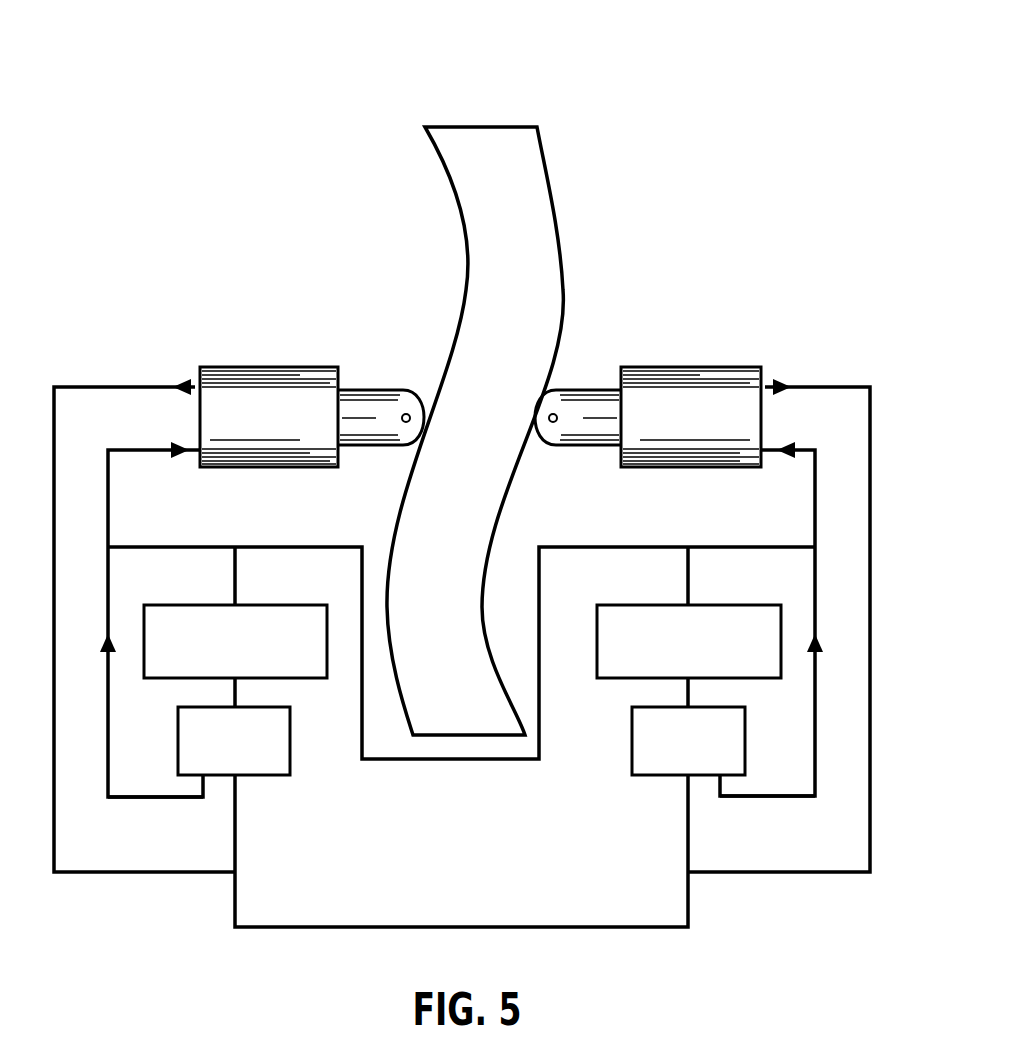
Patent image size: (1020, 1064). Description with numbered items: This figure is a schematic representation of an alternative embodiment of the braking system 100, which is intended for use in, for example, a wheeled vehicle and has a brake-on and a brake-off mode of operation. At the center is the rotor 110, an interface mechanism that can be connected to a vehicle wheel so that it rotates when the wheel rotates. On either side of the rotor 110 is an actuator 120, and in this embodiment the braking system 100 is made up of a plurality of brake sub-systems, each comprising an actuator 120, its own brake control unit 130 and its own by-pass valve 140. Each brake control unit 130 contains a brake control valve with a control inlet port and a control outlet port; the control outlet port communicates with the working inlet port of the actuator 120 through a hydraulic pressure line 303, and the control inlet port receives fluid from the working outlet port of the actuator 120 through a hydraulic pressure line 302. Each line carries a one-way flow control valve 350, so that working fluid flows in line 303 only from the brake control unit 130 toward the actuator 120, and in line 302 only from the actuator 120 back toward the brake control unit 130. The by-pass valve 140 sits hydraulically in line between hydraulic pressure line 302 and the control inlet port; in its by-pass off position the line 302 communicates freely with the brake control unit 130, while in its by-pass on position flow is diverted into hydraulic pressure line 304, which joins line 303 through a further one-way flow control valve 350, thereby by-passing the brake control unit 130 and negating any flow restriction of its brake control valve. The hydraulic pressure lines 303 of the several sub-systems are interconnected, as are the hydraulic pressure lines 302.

The braking system 100 is at (608, 68).
The rotor 110 is at (556, 172).
The actuator 120 is at (264, 382).
The brake control unit 130 is at (251, 605).
The by-pass valve 140 is at (280, 778).
The hydraulic pressure line 302 is at (157, 875).
The hydraulic pressure line 303 is at (343, 545).
The hydraulic pressure line 304 is at (139, 799).
The one-way flow control valve 350 is at (185, 384).